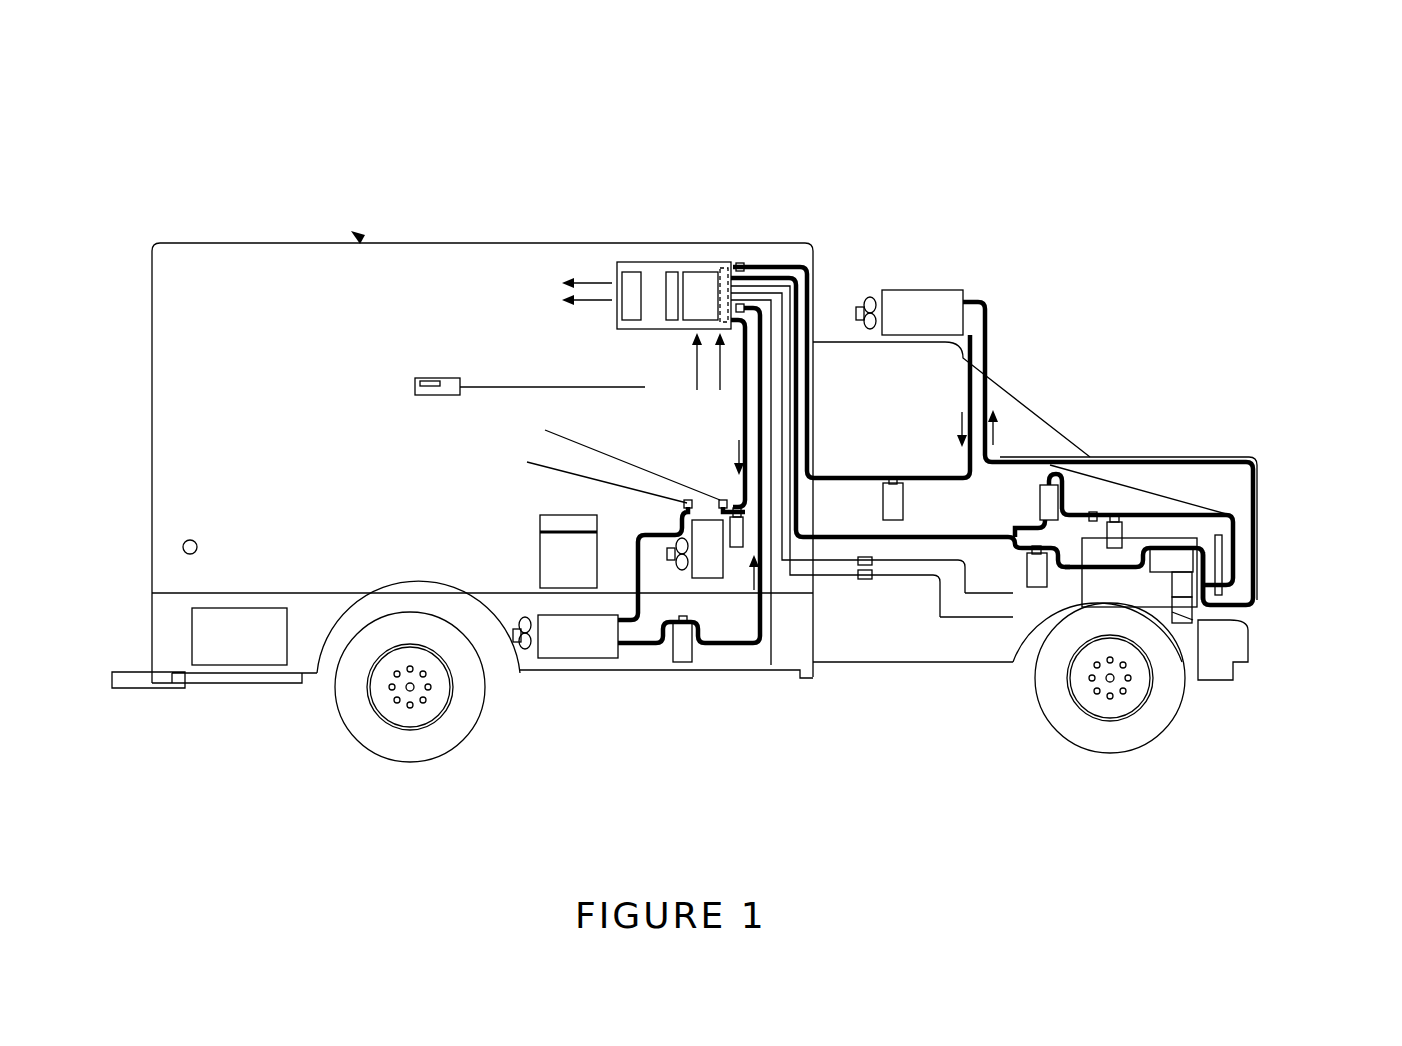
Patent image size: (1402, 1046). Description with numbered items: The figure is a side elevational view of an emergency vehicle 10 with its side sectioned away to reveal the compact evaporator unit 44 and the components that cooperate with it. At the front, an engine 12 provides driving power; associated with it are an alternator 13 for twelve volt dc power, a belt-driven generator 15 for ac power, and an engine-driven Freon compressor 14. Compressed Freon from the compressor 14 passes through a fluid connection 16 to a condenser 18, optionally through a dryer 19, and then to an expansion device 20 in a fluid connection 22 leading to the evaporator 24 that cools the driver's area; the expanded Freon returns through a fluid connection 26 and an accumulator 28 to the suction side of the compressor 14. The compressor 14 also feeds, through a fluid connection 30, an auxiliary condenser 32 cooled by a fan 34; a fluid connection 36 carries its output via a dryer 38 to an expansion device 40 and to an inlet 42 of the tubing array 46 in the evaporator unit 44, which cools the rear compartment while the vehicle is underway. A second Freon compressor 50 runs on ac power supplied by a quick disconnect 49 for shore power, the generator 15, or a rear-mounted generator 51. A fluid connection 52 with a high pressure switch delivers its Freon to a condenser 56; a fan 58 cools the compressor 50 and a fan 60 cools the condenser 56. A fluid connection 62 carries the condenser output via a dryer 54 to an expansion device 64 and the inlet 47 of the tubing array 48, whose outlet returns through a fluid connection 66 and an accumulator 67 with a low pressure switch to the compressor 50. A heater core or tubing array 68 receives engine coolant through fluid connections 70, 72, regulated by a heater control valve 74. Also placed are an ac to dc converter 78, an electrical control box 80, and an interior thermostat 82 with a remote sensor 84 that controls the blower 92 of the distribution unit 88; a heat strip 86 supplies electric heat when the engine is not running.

The emergency vehicle 10 is at (360, 241).
The engine 12 is at (1114, 535).
The alternator 13 is at (1186, 612).
The Freon compressor 14 is at (1165, 562).
The 110 volt generator 15 is at (1250, 645).
The fluid connection 16 is at (1218, 565).
The condenser 18 is at (1255, 535).
The dryer 19 is at (1152, 517).
The expansion device 20 is at (1095, 514).
The fluid connection 22 is at (1207, 552).
The evaporator 24 is at (1046, 510).
The fluid connection 26 is at (1183, 588).
The accumulator 28 is at (1040, 570).
The fluid connection 30 is at (987, 327).
The condenser 32 is at (940, 300).
The fan 34 is at (872, 302).
The fluid connection 36 is at (773, 267).
The dryer 38 is at (893, 500).
The expansion device 40 is at (750, 267).
The inlet 42 is at (735, 262).
The evaporator unit 44 is at (720, 267).
The tubing array 46 is at (728, 268).
The inlet 47 is at (742, 265).
The tubing array 48 is at (693, 268).
The quick disconnect 49 is at (193, 553).
The Freon compressor 50 is at (718, 572).
The 110 volt generator 51 is at (245, 640).
The fluid connection 52 is at (640, 538).
The dryer 54 is at (684, 568).
The condenser 56 is at (563, 648).
The fan 58 is at (687, 640).
The fan 60 is at (520, 645).
The fluid connection 62 is at (738, 530).
The expansion device 64 is at (757, 265).
The fluid connection 66 is at (743, 400).
The accumulator 67 is at (775, 565).
The tubing array 68 is at (712, 268).
The fluid connection 70 is at (960, 620).
The fluid connection 72 is at (990, 595).
The heater control valve 74 is at (866, 579).
The ac to dc converter 78 is at (545, 525).
The electrical control box 80 is at (548, 568).
The interior thermostat 82 is at (448, 382).
The remote sensor 84 is at (632, 283).
The heat strip 86 is at (640, 268).
The distribution unit 88 is at (672, 292).
The blower 92 is at (645, 387).